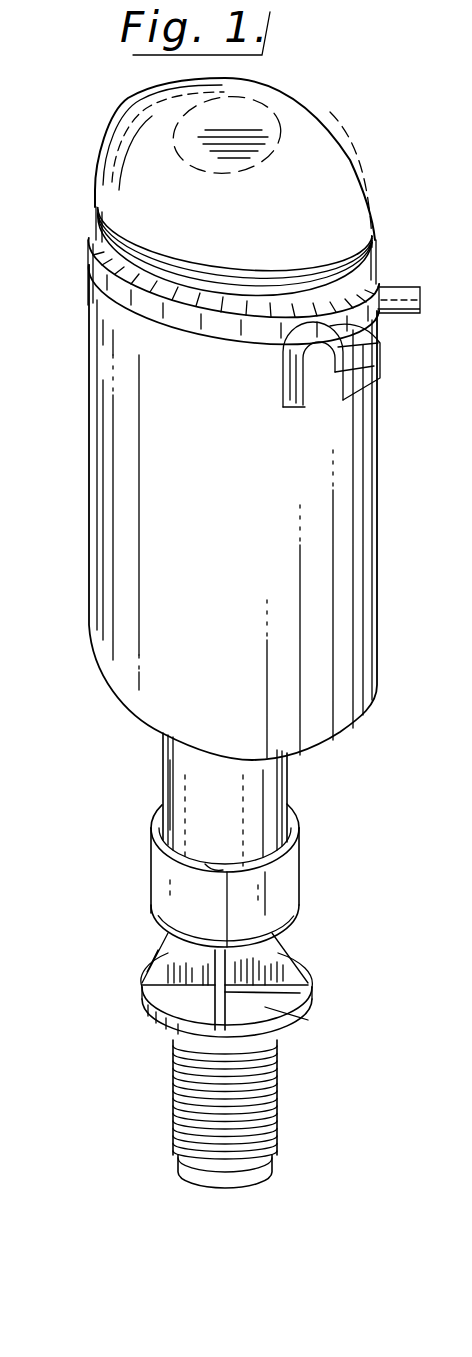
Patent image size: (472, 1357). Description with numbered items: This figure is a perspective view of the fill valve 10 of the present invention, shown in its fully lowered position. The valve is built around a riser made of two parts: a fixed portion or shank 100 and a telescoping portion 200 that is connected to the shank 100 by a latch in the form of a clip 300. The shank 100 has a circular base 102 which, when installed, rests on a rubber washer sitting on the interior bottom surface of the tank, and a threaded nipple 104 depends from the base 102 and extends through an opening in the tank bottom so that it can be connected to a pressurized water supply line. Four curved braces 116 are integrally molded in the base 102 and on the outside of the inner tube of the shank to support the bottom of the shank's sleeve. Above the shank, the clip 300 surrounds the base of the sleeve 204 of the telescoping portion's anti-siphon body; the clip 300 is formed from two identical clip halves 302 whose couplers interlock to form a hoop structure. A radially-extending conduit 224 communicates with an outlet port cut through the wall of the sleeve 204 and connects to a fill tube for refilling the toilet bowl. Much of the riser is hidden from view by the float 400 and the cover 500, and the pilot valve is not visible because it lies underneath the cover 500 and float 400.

The fill valve 10 is at (394, 196).
The cover 500 is at (316, 115).
The float 400 is at (90, 650).
The conduit 224 is at (413, 292).
The telescoping portion 200 is at (229, 799).
The sleeve 204 is at (161, 767).
The clip 300 is at (270, 875).
The clip halves 302 is at (298, 864).
The shank 100 is at (237, 1055).
The curved braces 116 is at (170, 963).
The circular base 102 is at (160, 1028).
The threaded nipple 104 is at (173, 1116).